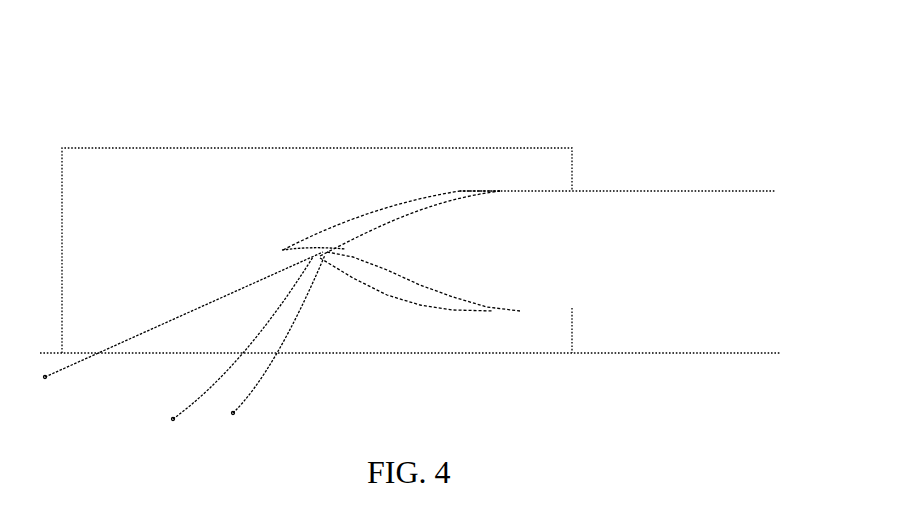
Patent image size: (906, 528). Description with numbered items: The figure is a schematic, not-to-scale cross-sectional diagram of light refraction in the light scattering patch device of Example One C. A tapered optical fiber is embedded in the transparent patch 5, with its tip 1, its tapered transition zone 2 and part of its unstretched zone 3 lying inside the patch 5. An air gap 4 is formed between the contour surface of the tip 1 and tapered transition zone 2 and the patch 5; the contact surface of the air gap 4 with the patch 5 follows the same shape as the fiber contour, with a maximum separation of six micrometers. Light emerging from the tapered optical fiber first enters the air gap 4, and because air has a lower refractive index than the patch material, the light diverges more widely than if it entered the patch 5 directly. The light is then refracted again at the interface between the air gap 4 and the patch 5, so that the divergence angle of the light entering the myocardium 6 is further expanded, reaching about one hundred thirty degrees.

The tip 1 is at (323, 258).
The tapered transition zone 2 is at (433, 203).
The unstretched zone 3 is at (632, 190).
The air gap 4 is at (376, 210).
The patch 5 is at (157, 253).
The myocardium 6 is at (410, 392).